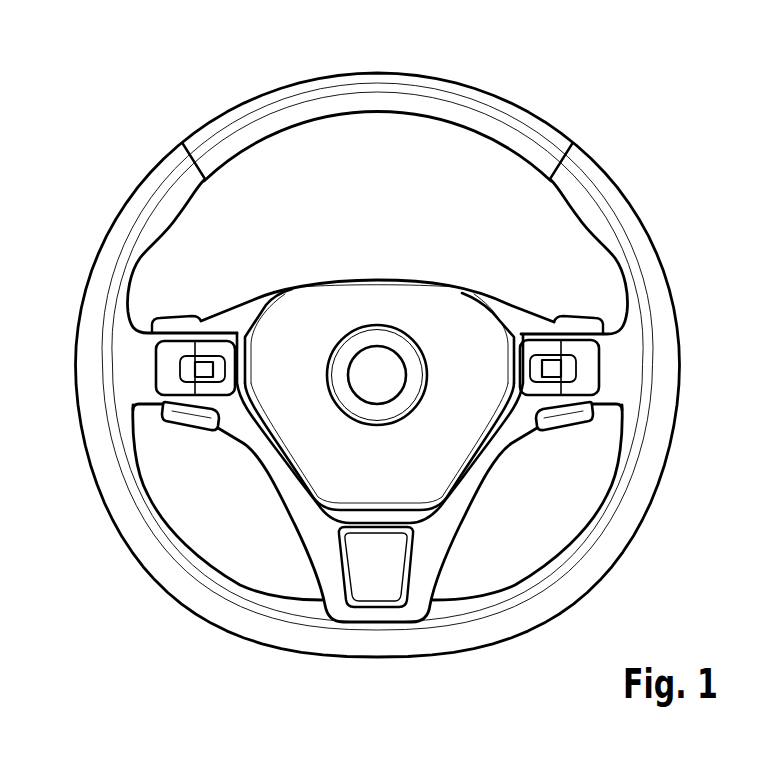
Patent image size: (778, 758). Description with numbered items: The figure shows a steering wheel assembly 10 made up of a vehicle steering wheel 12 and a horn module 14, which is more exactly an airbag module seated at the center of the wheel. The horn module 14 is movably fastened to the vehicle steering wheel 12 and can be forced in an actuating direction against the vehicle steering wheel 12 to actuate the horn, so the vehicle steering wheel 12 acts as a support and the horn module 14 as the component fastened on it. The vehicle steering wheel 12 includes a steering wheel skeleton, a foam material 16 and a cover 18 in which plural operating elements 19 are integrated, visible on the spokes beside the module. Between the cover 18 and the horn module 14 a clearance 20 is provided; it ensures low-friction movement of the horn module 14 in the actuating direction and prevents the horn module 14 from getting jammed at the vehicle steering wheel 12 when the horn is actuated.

The steering wheel assembly 10 is at (184, 91).
The vehicle steering wheel 12 is at (516, 106).
The horn module 14 is at (356, 298).
The foam material 16 is at (620, 207).
The cover 18 is at (520, 418).
The operating elements 19 is at (203, 368).
The clearance 20 is at (287, 474).